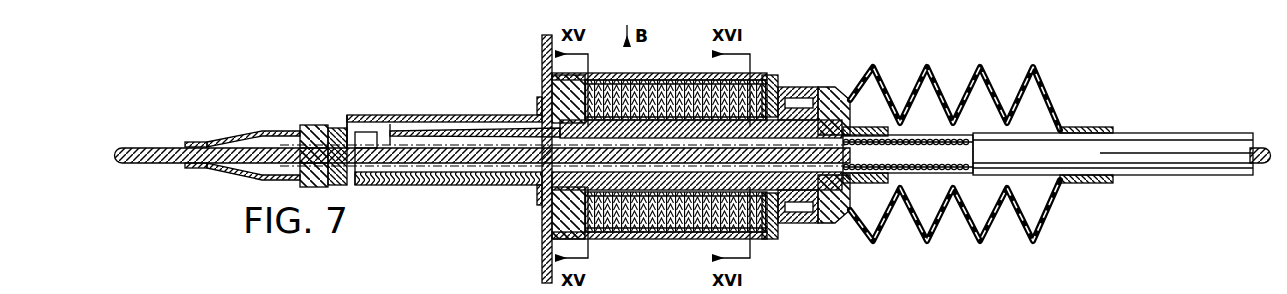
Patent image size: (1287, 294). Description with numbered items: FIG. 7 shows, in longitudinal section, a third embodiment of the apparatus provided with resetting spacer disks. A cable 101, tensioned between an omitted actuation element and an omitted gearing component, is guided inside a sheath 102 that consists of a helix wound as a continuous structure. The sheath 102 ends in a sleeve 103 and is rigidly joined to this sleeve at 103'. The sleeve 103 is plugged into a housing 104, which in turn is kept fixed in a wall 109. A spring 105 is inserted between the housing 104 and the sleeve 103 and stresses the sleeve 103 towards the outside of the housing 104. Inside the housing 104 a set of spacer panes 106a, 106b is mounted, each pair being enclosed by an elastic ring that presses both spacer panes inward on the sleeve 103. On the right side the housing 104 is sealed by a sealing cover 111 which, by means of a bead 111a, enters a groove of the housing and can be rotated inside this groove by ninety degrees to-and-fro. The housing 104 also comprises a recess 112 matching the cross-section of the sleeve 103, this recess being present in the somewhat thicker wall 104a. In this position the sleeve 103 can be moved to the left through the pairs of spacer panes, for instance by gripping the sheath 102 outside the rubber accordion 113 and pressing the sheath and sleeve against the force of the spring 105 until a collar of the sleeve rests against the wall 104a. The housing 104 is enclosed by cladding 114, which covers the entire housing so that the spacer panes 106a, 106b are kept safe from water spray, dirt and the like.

The cable 101 is at (149, 147).
The sheath 102 is at (1174, 156).
The sleeve 103 is at (836, 224).
The joint of sheath to sleeve 103' is at (887, 109).
The housing 104 is at (790, 222).
The thicker wall of housing 104a is at (542, 212).
The spring 105 is at (347, 130).
The spacer pane 106a is at (766, 76).
The spacer pane 106b is at (622, 212).
The wall 109 is at (541, 53).
The sealing cover 111 is at (842, 216).
The bead 111a is at (793, 88).
The recess 112 is at (552, 97).
The rubber accordion 113 is at (992, 84).
The cladding 114 is at (670, 73).